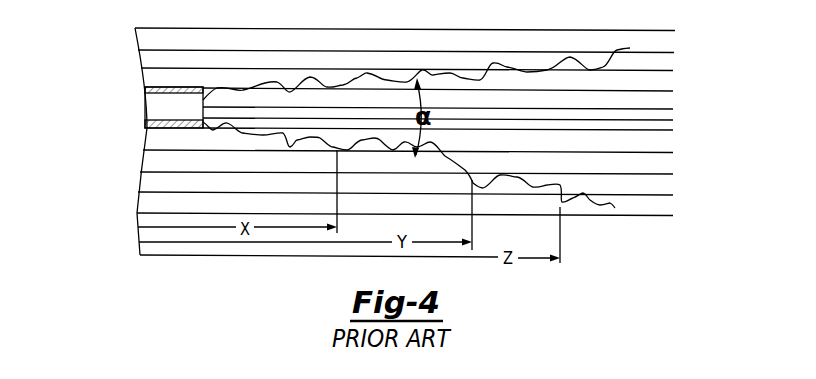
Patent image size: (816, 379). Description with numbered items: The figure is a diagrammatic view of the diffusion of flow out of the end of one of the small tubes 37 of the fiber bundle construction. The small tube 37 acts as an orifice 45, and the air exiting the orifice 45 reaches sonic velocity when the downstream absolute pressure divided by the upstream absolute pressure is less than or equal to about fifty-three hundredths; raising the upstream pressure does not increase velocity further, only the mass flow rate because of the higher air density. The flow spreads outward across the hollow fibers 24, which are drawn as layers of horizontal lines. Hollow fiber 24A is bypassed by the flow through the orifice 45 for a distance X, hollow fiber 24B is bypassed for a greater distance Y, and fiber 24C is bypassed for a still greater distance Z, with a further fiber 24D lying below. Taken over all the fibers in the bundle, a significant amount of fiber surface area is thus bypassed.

The hollow fibers 24 is at (137, 80).
The hollow fiber 24A is at (143, 143).
The hollow fiber 24B is at (140, 162).
The fiber 24C is at (137, 188).
The fourth layer 24D is at (137, 210).
The small tube 37 is at (153, 112).
The orifice 45 is at (205, 100).